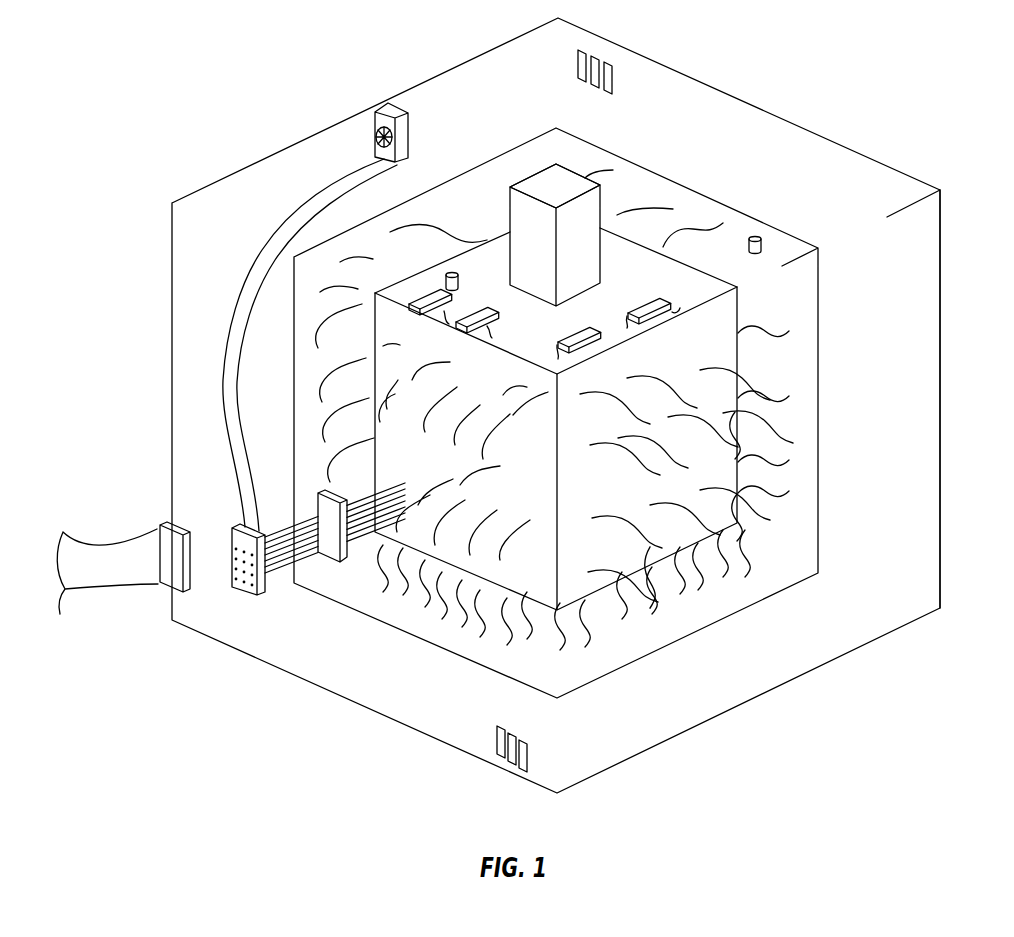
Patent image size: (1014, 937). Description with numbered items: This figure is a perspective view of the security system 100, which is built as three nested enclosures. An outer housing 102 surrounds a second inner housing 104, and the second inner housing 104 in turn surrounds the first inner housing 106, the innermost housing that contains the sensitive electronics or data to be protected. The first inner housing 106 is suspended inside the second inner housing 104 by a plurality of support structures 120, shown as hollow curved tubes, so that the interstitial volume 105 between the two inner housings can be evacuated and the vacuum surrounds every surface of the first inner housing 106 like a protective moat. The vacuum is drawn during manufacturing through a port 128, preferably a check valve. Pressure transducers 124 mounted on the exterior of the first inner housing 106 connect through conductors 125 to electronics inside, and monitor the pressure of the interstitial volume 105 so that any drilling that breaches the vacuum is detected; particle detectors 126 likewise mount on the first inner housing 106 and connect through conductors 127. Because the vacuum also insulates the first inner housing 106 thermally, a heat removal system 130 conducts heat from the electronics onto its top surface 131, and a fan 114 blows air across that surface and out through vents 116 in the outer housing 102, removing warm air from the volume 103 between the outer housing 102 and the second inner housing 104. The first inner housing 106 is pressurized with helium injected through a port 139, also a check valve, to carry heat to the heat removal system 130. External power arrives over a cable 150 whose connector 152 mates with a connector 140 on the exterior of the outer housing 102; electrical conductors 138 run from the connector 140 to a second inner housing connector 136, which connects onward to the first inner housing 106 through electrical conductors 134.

The security system 100 is at (852, 73).
The outer housing 102 is at (910, 173).
The volume 103 is at (915, 233).
The second inner housing 104 is at (740, 212).
The interstitial volume 105 is at (790, 302).
The first inner housing 106 is at (681, 262).
The fan 114 is at (403, 114).
The vents 116 is at (603, 54).
The support structures 120 is at (360, 293).
The pressure transducers 124 is at (472, 313).
The conductors 125 is at (493, 325).
The particle detectors 126 is at (633, 302).
The conductors 127 is at (680, 300).
The port 128 is at (758, 238).
The heat removal system 130 is at (591, 239).
The top surface 131 is at (563, 192).
The electrical conductors 134 is at (362, 544).
The second inner housing connector 136 is at (319, 492).
The electrical conductors 138 is at (283, 578).
The port 139 is at (455, 272).
The connector 140 is at (248, 600).
The cable 150 is at (118, 567).
The connector 152 is at (163, 528).